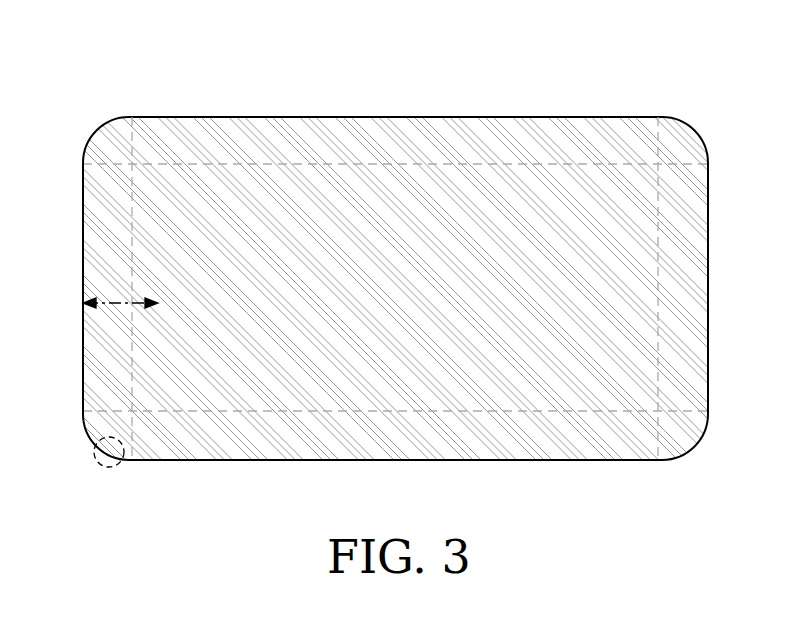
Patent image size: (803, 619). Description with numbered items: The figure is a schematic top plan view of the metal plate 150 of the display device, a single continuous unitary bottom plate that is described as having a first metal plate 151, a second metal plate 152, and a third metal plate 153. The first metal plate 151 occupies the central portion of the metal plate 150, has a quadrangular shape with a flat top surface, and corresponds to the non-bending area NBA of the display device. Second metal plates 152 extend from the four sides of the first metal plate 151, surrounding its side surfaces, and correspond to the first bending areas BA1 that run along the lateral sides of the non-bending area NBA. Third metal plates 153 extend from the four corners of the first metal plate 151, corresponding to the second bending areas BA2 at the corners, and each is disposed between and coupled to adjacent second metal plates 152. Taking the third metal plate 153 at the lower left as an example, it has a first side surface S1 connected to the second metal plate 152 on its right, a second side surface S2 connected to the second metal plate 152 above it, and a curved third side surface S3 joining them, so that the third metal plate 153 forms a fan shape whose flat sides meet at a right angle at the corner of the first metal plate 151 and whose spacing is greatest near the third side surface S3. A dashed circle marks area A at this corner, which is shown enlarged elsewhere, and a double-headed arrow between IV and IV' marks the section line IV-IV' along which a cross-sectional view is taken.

The second bending area BA2 is at (103, 143).
The first bending area BA1 is at (168, 140).
The non-bending area NBA is at (287, 212).
The metal plate 150 is at (698, 52).
The first metal plate 151 is at (577, 185).
The second metal plate 152 is at (622, 142).
The third metal plate 153 is at (687, 143).
The section line IV-IV' IV is at (110, 304).
The section line IV- IV' is at (133, 288).
The first side surface S1 is at (133, 445).
The second side surface S2 is at (102, 410).
The third side surface S3 is at (102, 447).
The area A is at (100, 467).